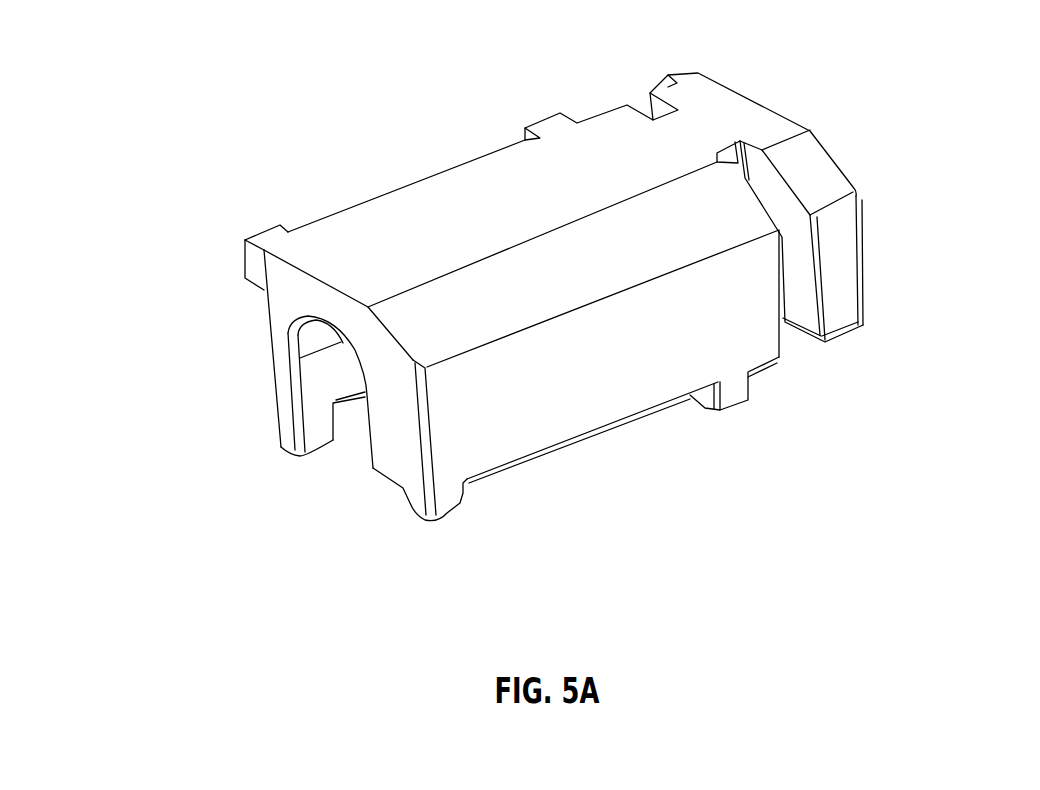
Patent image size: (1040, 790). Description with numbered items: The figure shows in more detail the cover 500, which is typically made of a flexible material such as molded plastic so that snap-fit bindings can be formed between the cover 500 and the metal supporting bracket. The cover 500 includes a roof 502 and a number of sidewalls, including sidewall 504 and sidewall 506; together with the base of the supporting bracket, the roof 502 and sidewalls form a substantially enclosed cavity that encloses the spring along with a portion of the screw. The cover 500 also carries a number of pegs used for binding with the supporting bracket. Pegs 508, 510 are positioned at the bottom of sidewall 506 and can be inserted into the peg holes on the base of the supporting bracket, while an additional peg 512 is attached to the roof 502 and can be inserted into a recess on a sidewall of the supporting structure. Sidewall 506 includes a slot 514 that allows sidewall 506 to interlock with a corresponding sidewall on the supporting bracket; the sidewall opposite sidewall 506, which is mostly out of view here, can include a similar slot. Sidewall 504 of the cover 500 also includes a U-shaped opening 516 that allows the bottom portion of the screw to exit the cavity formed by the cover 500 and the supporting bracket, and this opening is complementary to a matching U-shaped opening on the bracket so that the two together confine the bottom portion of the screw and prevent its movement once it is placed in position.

The cover 500 is at (938, 92).
The roof 502 is at (417, 200).
The sidewall 504 is at (283, 317).
The sidewall 506 is at (612, 388).
The peg 508 is at (412, 502).
The peg 510 is at (732, 395).
The peg 512 is at (252, 265).
The slot 514 is at (795, 328).
The U-shaped opening 516 is at (357, 427).